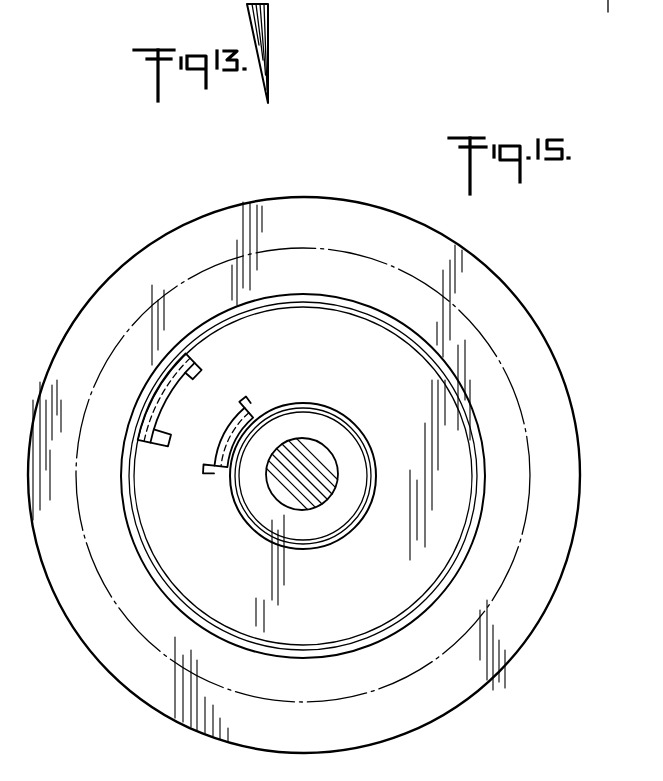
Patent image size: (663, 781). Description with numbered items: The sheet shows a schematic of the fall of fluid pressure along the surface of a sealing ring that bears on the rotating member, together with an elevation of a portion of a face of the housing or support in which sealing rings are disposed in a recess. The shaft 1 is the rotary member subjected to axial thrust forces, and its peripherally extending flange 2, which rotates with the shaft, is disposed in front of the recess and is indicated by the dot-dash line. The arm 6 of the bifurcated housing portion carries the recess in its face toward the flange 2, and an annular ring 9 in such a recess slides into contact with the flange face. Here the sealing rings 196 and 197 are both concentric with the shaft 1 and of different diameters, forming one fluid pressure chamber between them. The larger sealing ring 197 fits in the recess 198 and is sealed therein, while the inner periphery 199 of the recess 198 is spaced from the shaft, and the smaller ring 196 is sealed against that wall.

The shaft 1 is at (327, 460).
The flange 2 is at (497, 357).
The arm 6 is at (483, 282).
The annular ring 9 is at (187, 368).
The sealing ring 196 is at (306, 402).
The sealing ring 197 is at (305, 656).
The recess 198 is at (167, 433).
The inner periphery 199 is at (240, 402).